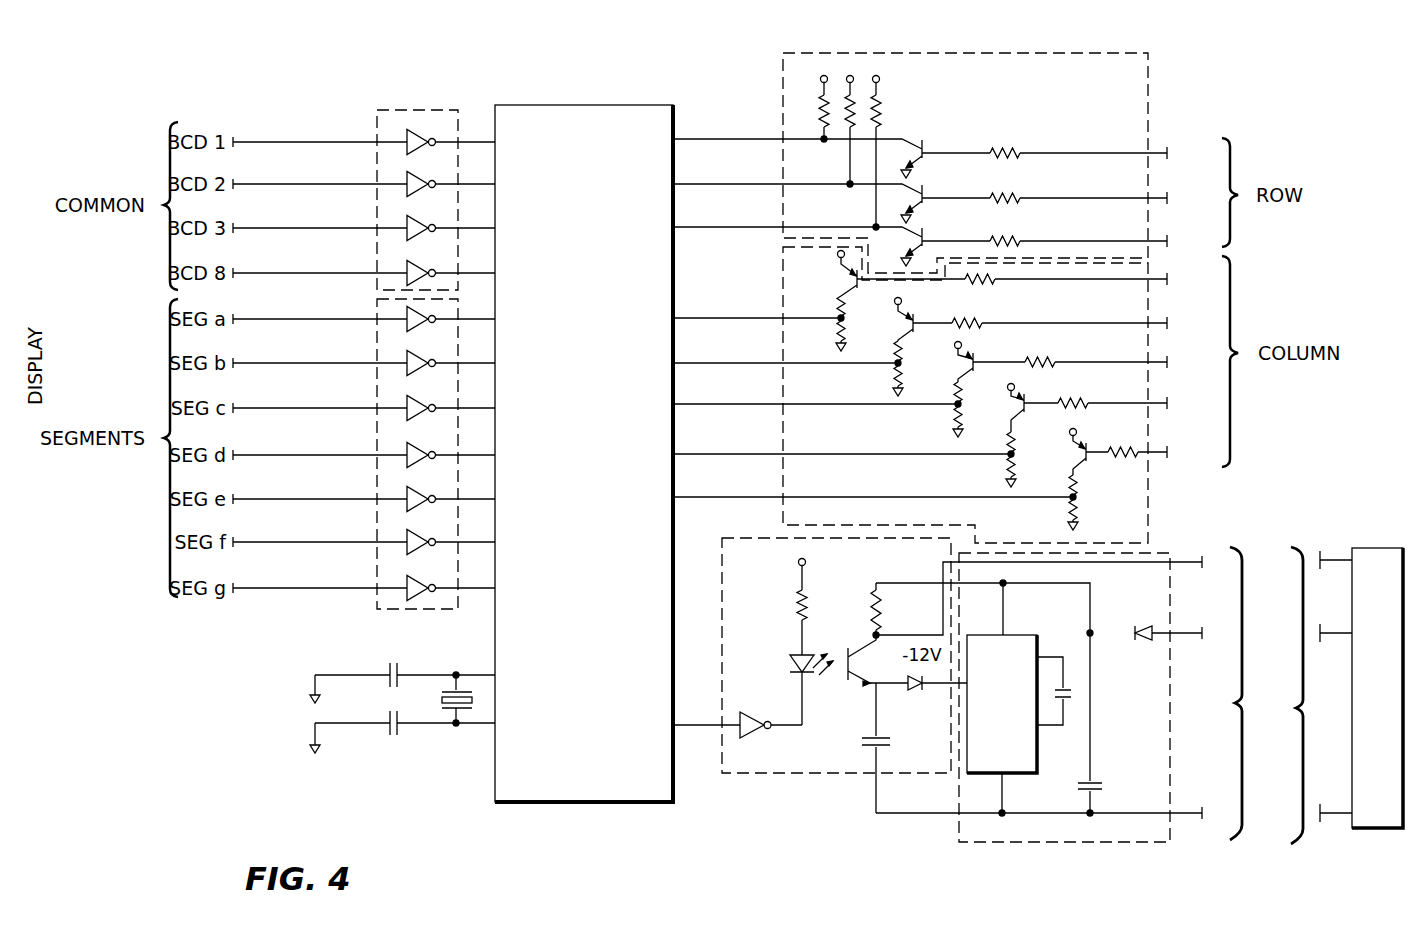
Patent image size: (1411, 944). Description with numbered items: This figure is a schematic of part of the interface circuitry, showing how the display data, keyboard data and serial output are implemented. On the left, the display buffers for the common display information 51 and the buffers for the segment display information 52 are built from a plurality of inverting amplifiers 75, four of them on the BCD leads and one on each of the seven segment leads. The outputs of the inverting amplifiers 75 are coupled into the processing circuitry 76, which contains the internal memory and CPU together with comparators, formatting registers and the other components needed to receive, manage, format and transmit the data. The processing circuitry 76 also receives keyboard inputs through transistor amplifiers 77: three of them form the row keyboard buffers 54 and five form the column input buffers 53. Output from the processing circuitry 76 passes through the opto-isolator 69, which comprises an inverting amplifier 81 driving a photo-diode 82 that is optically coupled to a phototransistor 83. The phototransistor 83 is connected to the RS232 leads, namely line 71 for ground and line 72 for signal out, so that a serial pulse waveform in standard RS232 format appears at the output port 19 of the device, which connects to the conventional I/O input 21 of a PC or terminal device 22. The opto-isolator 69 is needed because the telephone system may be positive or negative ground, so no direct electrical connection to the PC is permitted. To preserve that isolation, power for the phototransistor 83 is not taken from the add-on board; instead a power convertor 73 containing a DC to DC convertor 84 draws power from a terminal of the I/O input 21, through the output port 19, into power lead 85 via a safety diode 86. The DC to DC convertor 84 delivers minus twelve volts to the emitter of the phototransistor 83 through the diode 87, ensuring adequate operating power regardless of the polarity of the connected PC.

The output port 19 is at (1234, 843).
The I/O input 21 is at (1304, 847).
The personal computer 22 is at (1388, 548).
The display buffers for the common display information 51 is at (377, 123).
The buffers for the segment display information 52 is at (387, 610).
The column input buffers 53 is at (1150, 517).
The row keyboard buffers 54 is at (1113, 52).
The opto-isolator 69 is at (832, 775).
The line for ground 71 is at (1190, 818).
The line for signal out 72 is at (1190, 561).
The power convertor 73 is at (1090, 843).
The inverting amplifiers 75 is at (408, 146).
The processing circuitry 76 is at (570, 263).
The transistor amplifiers 77 is at (924, 141).
The inverting amplifier 81 is at (762, 737).
The photo-diode 82 is at (795, 655).
The phototransistor 83 is at (870, 646).
The DC to DC convertor 84 is at (1022, 634).
The power lead 85 is at (1190, 632).
The safety diode 86 is at (1147, 626).
The diode 87 is at (912, 691).